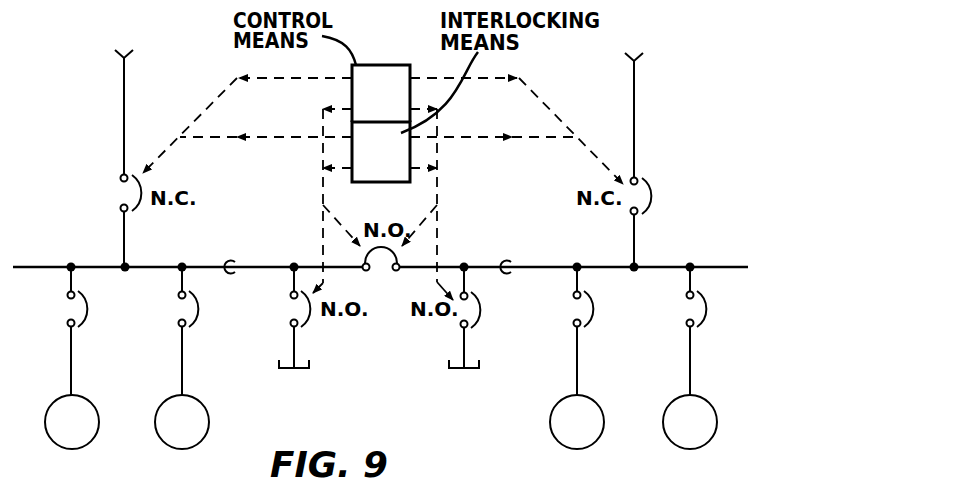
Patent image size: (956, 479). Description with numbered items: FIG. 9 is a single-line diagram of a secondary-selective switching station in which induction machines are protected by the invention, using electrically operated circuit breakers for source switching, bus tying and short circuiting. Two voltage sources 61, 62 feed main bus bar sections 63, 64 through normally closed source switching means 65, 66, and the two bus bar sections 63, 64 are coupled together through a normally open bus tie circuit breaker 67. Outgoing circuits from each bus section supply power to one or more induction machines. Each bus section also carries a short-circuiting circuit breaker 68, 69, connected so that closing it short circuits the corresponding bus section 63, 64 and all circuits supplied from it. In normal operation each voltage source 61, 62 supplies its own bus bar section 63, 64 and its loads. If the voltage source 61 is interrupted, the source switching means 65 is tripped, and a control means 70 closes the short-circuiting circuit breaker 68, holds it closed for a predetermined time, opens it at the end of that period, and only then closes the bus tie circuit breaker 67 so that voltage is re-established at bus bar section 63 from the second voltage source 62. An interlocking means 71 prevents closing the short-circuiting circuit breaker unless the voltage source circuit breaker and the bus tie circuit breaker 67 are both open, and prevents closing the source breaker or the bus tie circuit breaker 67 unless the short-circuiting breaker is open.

The voltage source 61 is at (637, 103).
The voltage source 62 is at (125, 101).
The main bus bar section 63 is at (511, 259).
The main bus bar section 64 is at (235, 259).
The normally closed source switching means 65 is at (661, 223).
The normally closed source switching means 66 is at (115, 221).
The normally open bus tie circuit breaker 67 is at (381, 272).
The short-circuiting circuit breaker 68 is at (485, 317).
The short-circuiting circuit breaker 69 is at (286, 317).
The control means 70 is at (392, 110).
The interlocking means 71 is at (390, 161).